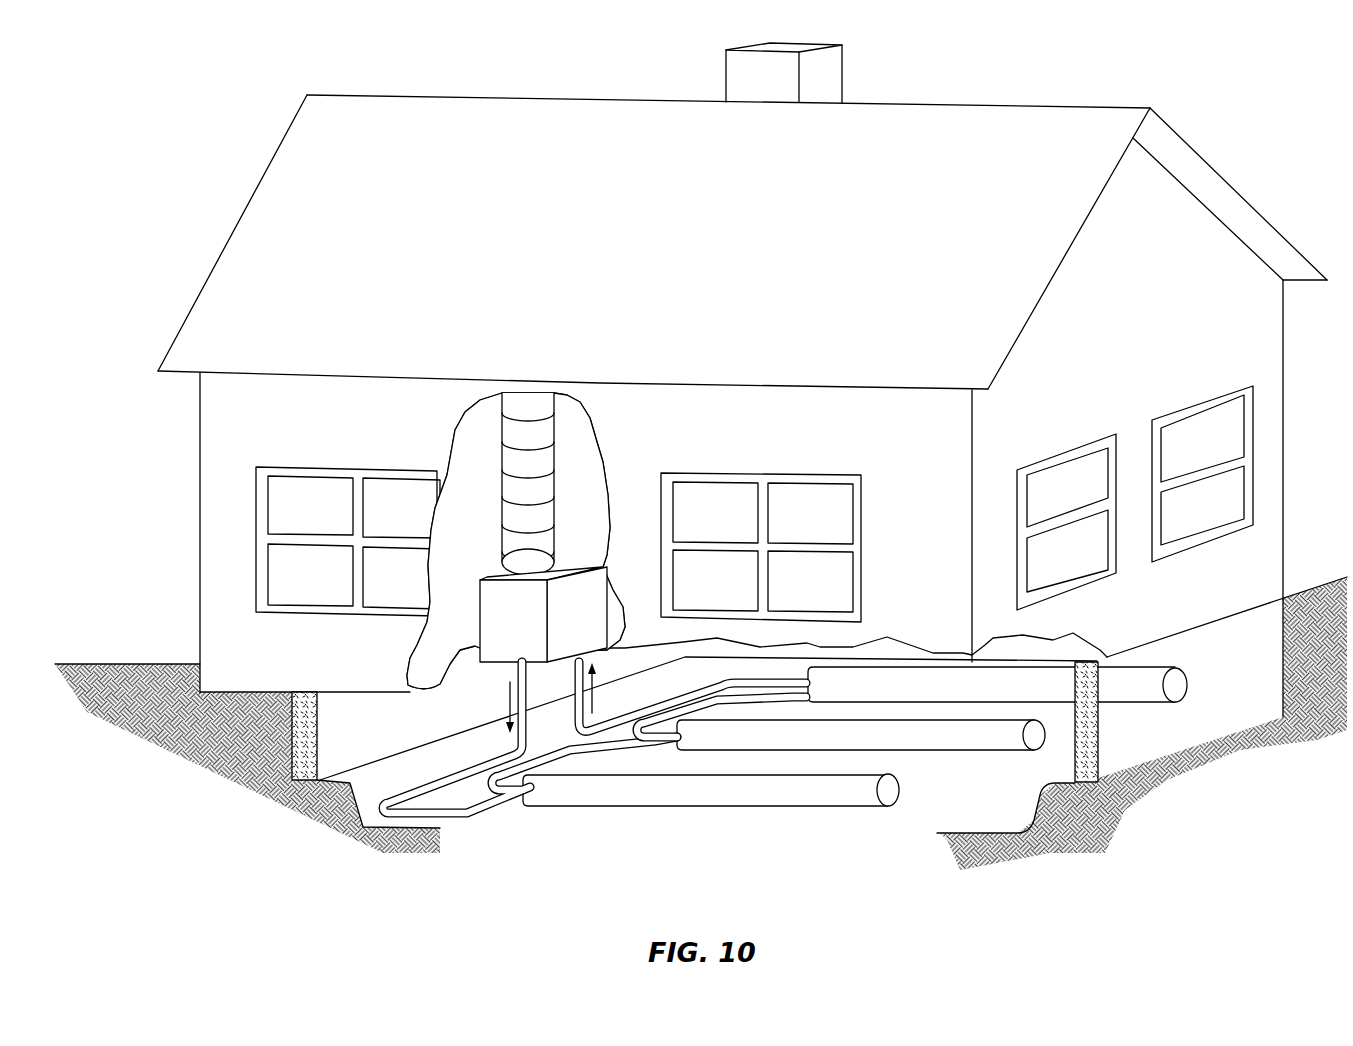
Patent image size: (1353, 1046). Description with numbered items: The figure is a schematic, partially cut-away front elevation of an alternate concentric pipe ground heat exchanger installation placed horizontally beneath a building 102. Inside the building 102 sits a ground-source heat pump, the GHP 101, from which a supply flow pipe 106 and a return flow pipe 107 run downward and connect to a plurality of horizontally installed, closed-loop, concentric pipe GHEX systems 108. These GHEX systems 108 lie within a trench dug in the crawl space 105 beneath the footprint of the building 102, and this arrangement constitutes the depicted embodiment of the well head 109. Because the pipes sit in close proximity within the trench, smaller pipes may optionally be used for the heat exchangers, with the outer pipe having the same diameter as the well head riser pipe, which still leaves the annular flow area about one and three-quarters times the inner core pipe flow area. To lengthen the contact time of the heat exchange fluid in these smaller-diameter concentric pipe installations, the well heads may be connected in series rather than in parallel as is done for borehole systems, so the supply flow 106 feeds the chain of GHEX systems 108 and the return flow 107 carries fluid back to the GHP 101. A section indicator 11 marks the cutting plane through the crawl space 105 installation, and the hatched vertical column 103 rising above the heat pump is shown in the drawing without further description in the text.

The GHP 101 is at (497, 627).
The building 102 is at (153, 497).
The insulated vertical duct 103 is at (532, 420).
The crawl space 105 is at (333, 733).
The supply flow pipe 106 is at (503, 703).
The return flow pipe 107 is at (597, 675).
The concentric pipe GHEX systems 108 is at (988, 747).
The well head 109 is at (367, 864).
The section line 11- 11 is at (412, 699).